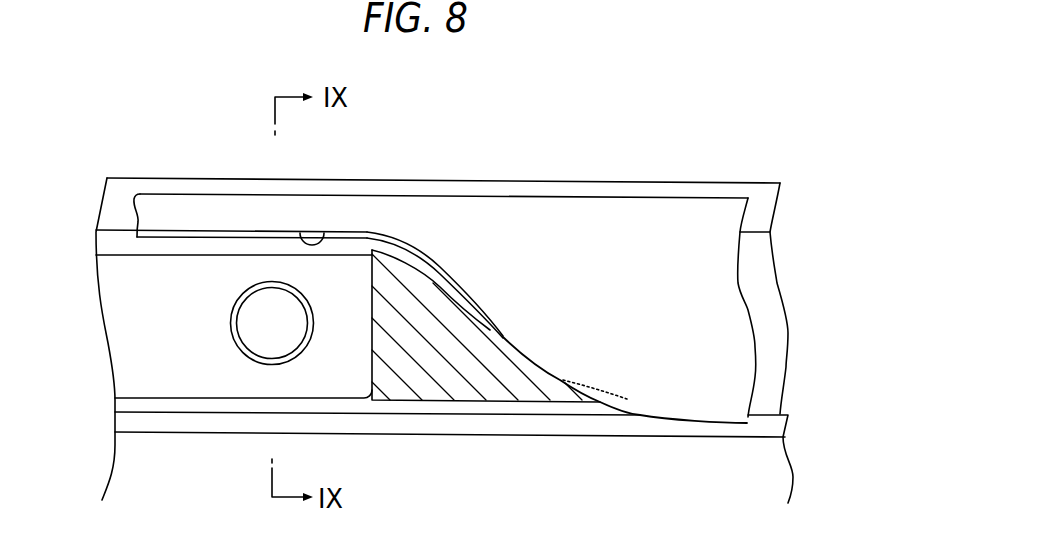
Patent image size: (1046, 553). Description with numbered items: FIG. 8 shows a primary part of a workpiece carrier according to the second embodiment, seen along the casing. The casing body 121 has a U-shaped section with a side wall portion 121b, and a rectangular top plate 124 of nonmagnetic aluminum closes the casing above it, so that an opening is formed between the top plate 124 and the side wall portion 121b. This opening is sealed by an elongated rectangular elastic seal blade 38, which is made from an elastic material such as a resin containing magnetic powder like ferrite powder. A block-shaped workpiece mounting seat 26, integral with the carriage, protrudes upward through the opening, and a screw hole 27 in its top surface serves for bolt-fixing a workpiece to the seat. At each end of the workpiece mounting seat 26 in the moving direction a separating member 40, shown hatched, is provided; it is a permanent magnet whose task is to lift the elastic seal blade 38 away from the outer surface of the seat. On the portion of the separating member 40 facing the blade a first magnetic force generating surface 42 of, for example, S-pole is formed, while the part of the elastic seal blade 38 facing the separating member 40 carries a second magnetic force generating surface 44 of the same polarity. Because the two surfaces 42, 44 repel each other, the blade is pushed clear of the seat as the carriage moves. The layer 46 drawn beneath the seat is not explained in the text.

The casing body 121 is at (159, 169).
The side wall portion 121b is at (300, 188).
The elastic seal blade 38 is at (508, 235).
The first magnetic force generating surface 42 is at (405, 257).
The second magnetic force generating surface 44 is at (327, 237).
The separating member 40 is at (457, 382).
The workpiece mounting seat 26 is at (118, 343).
The screw hole 27 is at (245, 292).
The intermediate layer 46 is at (135, 421).
The top plate 124 is at (135, 469).